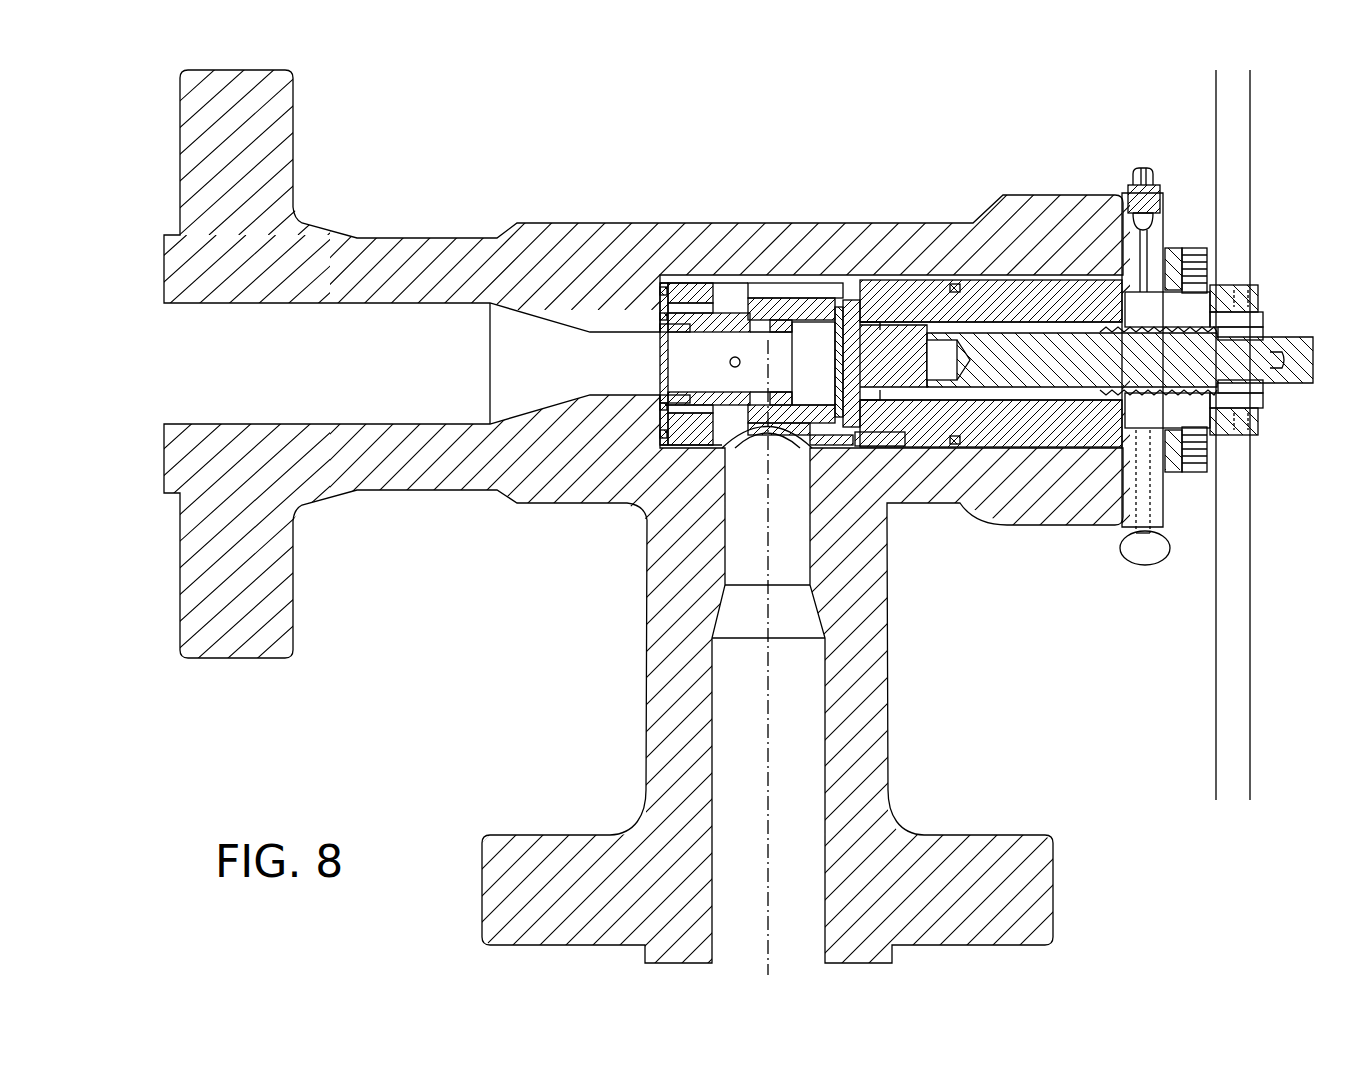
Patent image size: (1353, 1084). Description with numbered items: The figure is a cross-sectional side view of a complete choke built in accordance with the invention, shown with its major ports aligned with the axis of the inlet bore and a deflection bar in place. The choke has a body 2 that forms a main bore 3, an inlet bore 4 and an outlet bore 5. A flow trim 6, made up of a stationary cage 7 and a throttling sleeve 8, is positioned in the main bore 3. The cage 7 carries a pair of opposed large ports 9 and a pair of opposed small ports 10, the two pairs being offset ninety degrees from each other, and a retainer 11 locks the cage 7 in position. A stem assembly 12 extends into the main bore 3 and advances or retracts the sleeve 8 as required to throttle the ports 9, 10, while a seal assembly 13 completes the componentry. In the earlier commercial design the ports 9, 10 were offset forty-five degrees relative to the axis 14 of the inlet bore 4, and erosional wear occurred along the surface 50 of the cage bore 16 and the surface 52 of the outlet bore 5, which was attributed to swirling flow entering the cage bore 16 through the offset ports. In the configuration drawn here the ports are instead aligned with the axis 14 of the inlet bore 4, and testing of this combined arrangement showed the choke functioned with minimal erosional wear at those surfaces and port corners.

The body 2 is at (565, 247).
The main bore 3 is at (876, 305).
The inlet bore 4 is at (790, 510).
The outlet bore 5 is at (632, 352).
The flow trim 6 is at (752, 330).
The stationary cage 7 is at (682, 305).
The throttling sleeve 8 is at (812, 300).
The large ports 9 is at (745, 335).
The small ports 10 is at (730, 363).
The retainer 11 is at (765, 300).
The stem assembly 12 is at (937, 330).
The seal assembly 13 is at (665, 420).
The axis of the inlet bore 14 is at (775, 697).
The cage bore 16 is at (787, 368).
The surface of the cage bore 50 is at (668, 393).
The surface of the outlet bore 52 is at (857, 440).